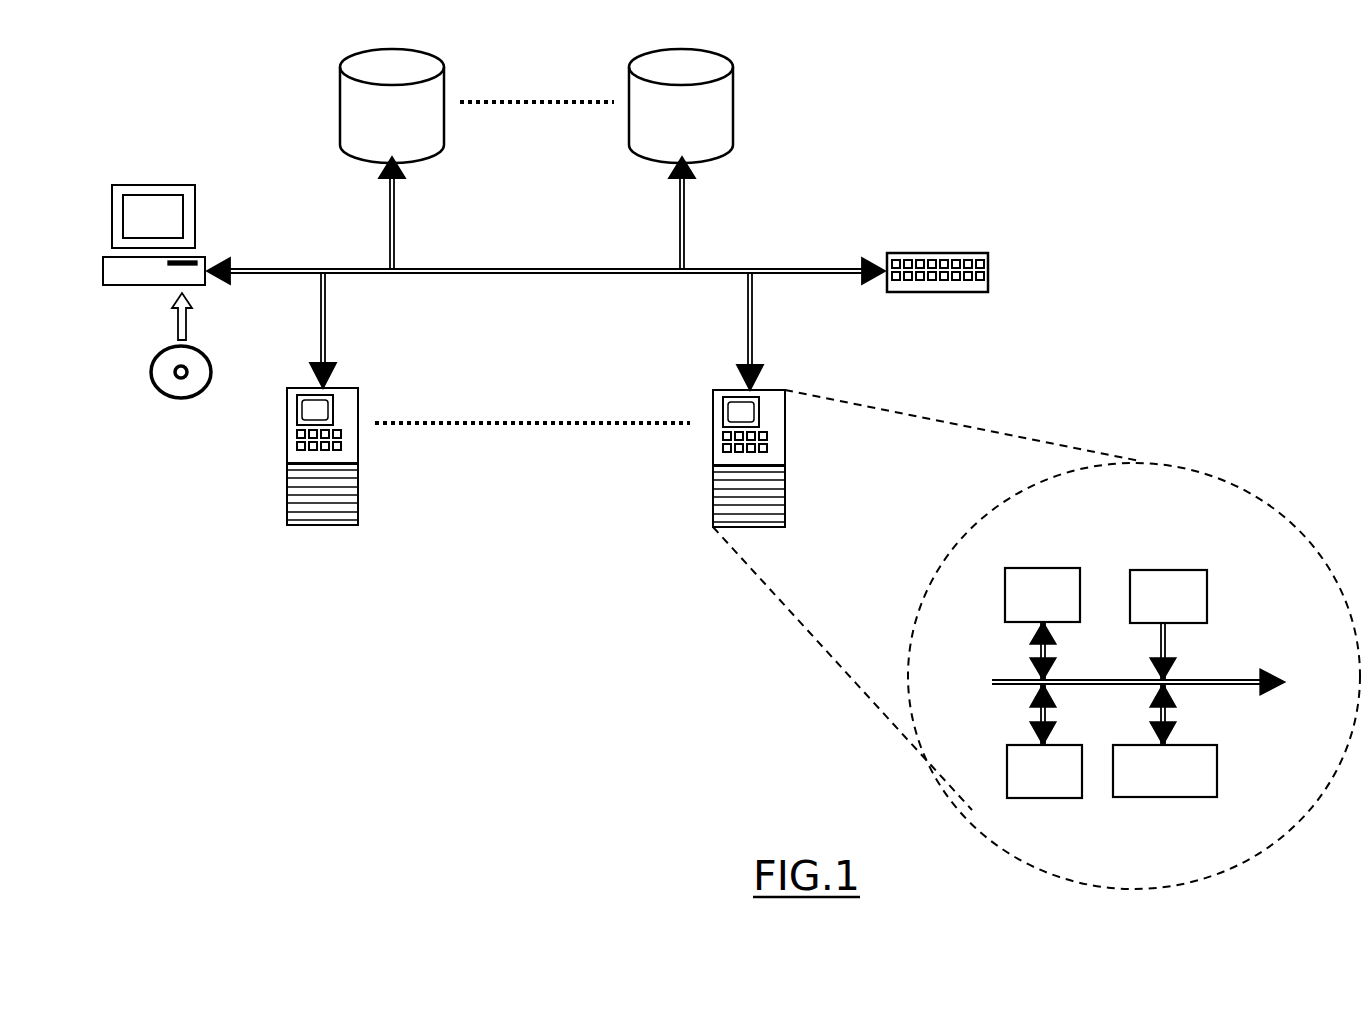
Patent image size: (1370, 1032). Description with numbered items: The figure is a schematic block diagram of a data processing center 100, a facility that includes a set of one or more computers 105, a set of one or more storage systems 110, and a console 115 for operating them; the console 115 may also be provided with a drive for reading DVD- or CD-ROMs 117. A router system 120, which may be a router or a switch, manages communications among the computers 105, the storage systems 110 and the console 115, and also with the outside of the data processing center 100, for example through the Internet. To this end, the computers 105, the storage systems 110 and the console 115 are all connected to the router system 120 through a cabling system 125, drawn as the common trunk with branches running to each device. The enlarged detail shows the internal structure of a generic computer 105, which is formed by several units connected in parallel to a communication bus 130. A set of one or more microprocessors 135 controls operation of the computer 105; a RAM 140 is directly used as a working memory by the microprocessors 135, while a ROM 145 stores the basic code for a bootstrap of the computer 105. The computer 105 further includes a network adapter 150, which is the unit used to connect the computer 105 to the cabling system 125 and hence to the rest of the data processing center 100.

The data processing center 100 is at (1130, 134).
The computer 105 is at (357, 493).
The storage system 110 is at (362, 157).
The console 115 is at (125, 185).
The DVD- or CD-ROM 117 is at (192, 400).
The router system 120 is at (940, 253).
The cabling system 125 is at (503, 273).
The communication bus 130 is at (1237, 684).
The microprocessor 135 is at (1055, 568).
The RAM 140 is at (1043, 798).
The ROM 145 is at (1178, 570).
The network adapter 150 is at (1172, 797).